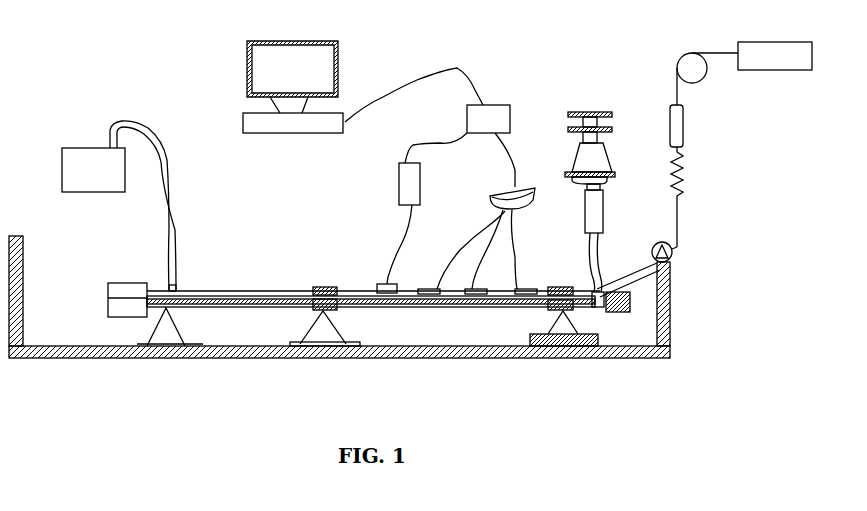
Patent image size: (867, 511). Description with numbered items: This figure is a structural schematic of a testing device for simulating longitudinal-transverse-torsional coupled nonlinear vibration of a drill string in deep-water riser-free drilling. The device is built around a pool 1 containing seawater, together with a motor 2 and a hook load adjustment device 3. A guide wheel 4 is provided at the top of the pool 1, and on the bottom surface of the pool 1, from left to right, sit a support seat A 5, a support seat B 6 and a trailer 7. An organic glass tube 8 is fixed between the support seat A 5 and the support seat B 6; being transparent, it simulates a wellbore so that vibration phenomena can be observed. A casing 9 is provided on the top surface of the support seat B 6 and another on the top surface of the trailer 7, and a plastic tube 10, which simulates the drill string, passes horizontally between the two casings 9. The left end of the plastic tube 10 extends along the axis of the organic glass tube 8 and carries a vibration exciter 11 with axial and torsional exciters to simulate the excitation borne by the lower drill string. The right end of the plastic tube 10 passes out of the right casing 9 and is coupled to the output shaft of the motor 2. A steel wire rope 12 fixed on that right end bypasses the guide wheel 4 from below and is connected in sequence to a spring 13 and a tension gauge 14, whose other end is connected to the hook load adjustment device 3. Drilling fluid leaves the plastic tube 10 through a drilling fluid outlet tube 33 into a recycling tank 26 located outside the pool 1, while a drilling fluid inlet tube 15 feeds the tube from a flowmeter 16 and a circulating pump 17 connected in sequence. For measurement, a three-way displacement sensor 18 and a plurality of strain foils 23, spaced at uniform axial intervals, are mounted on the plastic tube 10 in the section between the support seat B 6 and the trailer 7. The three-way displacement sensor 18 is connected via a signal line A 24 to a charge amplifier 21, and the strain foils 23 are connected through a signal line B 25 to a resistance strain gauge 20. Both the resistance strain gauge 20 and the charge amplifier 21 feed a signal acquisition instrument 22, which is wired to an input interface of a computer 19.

The pool 1 is at (664, 313).
The motor 2 is at (645, 346).
The hook load adjustment device 3 is at (765, 48).
The guide wheel 4 is at (673, 257).
The support seat A 5 is at (172, 337).
The support seat B 6 is at (327, 313).
The trailer 7 is at (572, 346).
The organic glass tube 8 is at (240, 308).
The casing 9 is at (333, 313).
The plastic tube 10 is at (412, 303).
The vibration exciter 11 is at (128, 317).
The steel wire rope 12 is at (663, 282).
The spring 13 is at (681, 178).
The tension gauge 14 is at (683, 115).
The drilling fluid inlet tube 15 is at (596, 243).
The flowmeter 16 is at (600, 208).
The circulating pump 17 is at (600, 155).
The three-way displacement sensor 18 is at (378, 287).
The computer 19 is at (322, 40).
The resistance strain gauge 20 is at (494, 197).
The charge amplifier 21 is at (404, 177).
The signal acquisition instrument 22 is at (465, 116).
The strain foils 23 is at (474, 300).
The signal line A 24 is at (410, 228).
The signal line B 25 is at (477, 237).
The recycling tank 26 is at (68, 160).
The drilling fluid outlet tube 33 is at (176, 217).